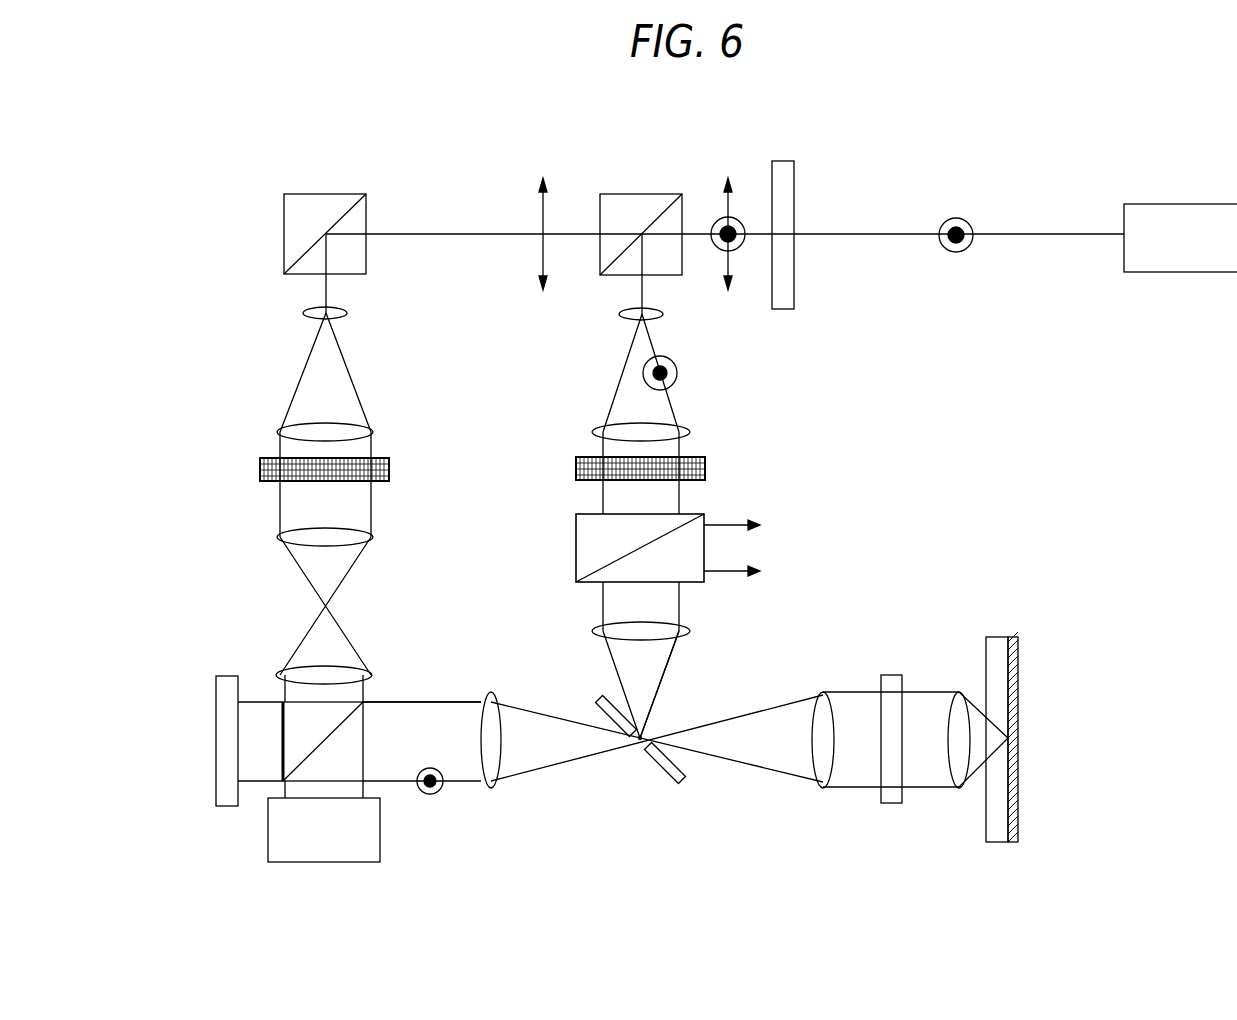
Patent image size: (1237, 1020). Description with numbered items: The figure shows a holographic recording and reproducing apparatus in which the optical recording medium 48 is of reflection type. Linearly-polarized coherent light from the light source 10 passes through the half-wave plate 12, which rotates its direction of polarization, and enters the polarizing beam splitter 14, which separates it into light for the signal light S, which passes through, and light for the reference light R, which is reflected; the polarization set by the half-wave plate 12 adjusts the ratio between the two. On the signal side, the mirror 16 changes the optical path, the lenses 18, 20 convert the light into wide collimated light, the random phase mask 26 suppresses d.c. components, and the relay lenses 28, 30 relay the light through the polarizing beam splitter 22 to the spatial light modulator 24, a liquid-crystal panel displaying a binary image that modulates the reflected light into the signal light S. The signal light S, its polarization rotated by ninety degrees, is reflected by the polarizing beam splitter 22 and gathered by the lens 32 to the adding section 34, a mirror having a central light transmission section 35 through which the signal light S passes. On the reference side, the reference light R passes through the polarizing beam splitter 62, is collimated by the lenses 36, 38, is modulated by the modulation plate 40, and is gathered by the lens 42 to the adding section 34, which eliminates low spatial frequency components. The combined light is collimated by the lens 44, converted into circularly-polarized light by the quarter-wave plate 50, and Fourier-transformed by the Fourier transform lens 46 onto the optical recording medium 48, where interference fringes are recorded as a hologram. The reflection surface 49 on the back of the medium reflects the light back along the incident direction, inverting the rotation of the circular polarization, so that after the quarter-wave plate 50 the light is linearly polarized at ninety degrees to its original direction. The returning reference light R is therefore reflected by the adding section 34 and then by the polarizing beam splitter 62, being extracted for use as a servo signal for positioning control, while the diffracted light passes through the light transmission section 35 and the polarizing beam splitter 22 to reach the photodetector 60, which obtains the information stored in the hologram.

The light source 10 is at (1183, 204).
The λ/2 plate 12 is at (783, 161).
The polarizing beam splitter 14 is at (642, 194).
The mirror 16 is at (326, 194).
The lens 18 is at (303, 313).
The lens 20 is at (277, 432).
The polarizing beam splitter 22 is at (363, 742).
The spatial light modulator 24 is at (268, 830).
The random phase mask 26 is at (260, 468).
The relay lens 28 is at (277, 537).
The relay lens 30 is at (277, 675).
The lens 32 is at (491, 692).
The adding section 34 is at (684, 784).
The light transmission section 35 is at (647, 752).
The lens 36 is at (619, 314).
The lens 38 is at (592, 432).
The modulation plate 40 is at (576, 468).
The lens 42 is at (592, 631).
The lens 44 is at (823, 692).
The Fourier transform lens 46 is at (959, 692).
The optical recording medium 48 is at (998, 637).
The reflection surface 49 is at (1018, 667).
The λ/4 plate 50 is at (891, 675).
The photodetector 60 is at (216, 745).
The polarizing beam splitter 62 is at (576, 548).
The signal light S is at (425, 700).
The reference light R is at (665, 683).